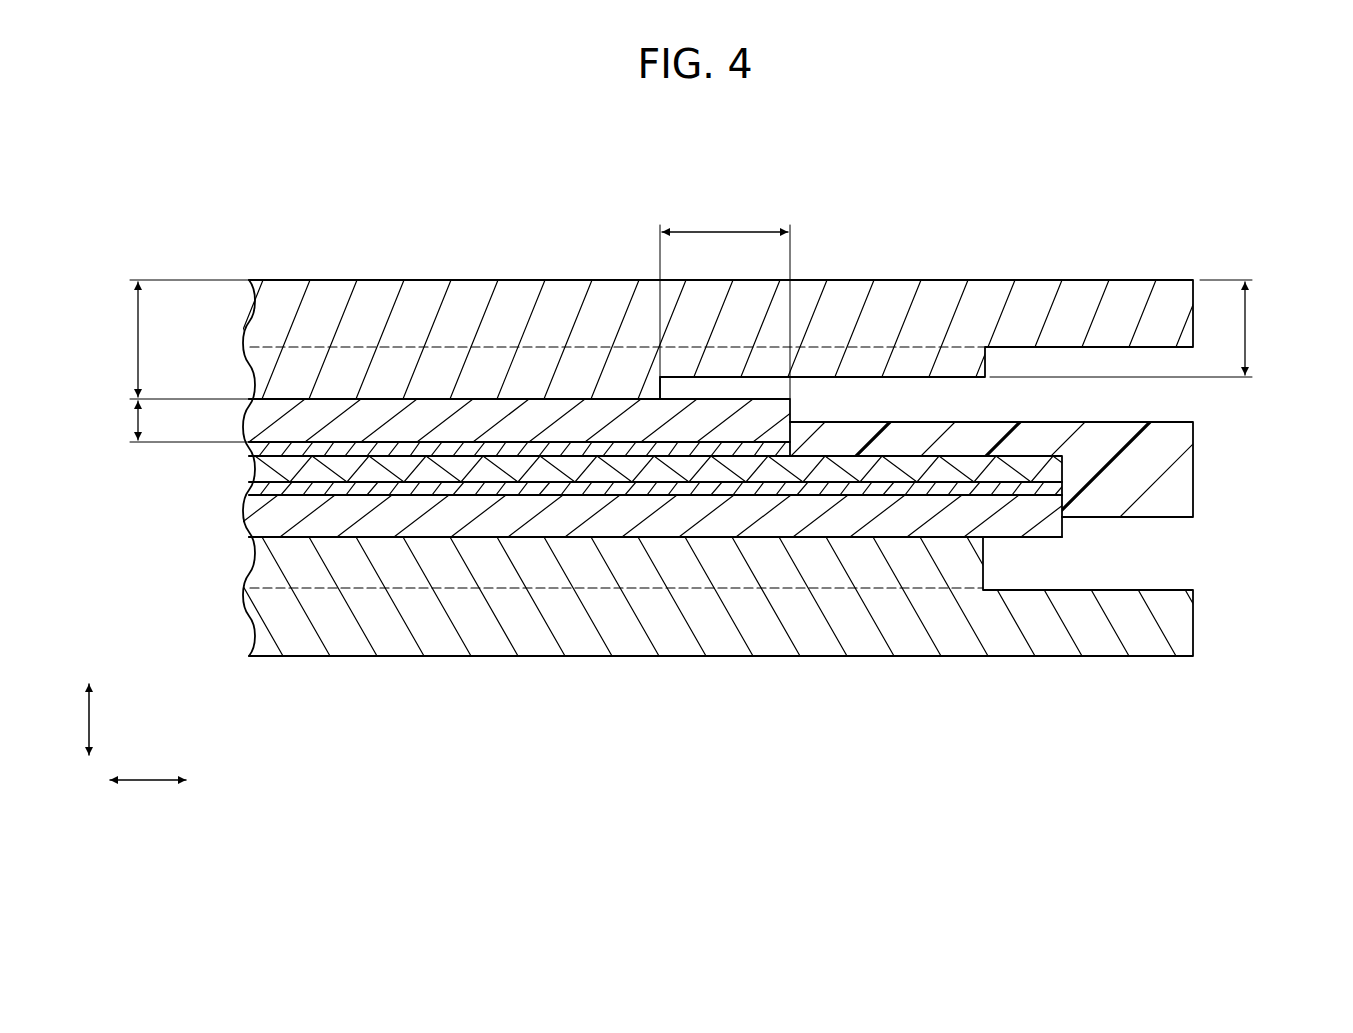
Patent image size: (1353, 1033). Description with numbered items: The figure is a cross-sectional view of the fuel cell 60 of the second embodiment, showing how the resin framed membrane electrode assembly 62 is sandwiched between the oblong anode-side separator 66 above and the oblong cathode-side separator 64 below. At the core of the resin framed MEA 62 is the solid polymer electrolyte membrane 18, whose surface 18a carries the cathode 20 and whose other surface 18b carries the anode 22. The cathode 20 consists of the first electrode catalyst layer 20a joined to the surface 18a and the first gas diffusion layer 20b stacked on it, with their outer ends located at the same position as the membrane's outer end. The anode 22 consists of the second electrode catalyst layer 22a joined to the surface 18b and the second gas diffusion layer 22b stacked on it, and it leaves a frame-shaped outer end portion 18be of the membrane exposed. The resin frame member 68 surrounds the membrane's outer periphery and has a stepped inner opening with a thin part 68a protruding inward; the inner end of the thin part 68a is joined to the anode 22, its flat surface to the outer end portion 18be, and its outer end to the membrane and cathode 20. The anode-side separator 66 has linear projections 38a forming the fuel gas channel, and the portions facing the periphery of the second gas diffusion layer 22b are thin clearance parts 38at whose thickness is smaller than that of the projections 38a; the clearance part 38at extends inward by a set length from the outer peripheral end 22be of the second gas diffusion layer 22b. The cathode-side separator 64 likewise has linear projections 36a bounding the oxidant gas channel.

The fuel cell 60 is at (716, 134).
The anode-side separator 66 is at (1195, 279).
The cathode-side separator 64 is at (1210, 589).
The resin framed membrane electrode assembly 62 is at (1012, 451).
The resin frame member 68 is at (1196, 421).
The thin part 68a is at (915, 432).
The anode 22 is at (529, 310).
The second electrode catalyst layer 22a is at (501, 450).
The second gas diffusion layer 22b is at (420, 417).
The outer peripheral end of second gas diffusion layer 22be is at (791, 404).
The solid polymer electrolyte membrane 18 is at (630, 473).
The surface of solid polymer electrolyte membrane 18a is at (295, 492).
The another surface of solid polymer electrolyte membrane 18b is at (272, 452).
The outer end portion of solid polymer electrolyte membrane 18be is at (907, 455).
The cathode 20 is at (649, 632).
The first electrode catalyst layer 20a is at (498, 485).
The first gas diffusion layer 20b is at (424, 520).
The linear projections 38a is at (573, 375).
The clearance part 38at is at (730, 380).
The linear projections 36a is at (962, 562).